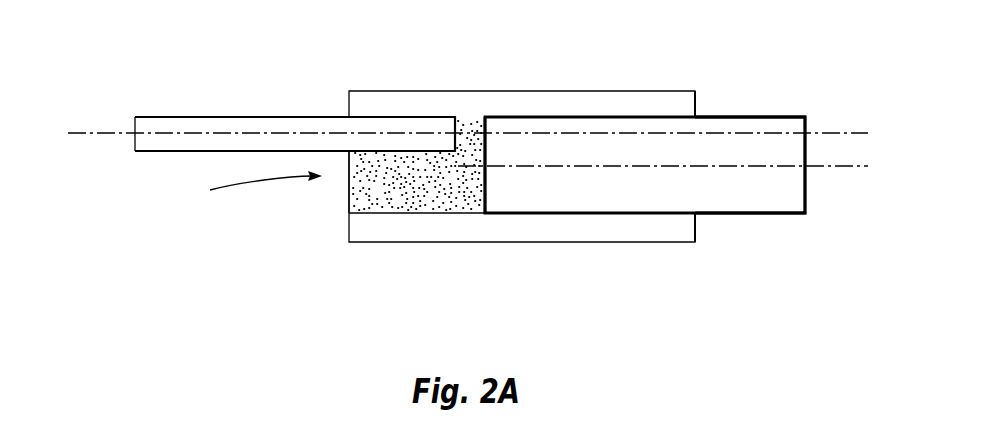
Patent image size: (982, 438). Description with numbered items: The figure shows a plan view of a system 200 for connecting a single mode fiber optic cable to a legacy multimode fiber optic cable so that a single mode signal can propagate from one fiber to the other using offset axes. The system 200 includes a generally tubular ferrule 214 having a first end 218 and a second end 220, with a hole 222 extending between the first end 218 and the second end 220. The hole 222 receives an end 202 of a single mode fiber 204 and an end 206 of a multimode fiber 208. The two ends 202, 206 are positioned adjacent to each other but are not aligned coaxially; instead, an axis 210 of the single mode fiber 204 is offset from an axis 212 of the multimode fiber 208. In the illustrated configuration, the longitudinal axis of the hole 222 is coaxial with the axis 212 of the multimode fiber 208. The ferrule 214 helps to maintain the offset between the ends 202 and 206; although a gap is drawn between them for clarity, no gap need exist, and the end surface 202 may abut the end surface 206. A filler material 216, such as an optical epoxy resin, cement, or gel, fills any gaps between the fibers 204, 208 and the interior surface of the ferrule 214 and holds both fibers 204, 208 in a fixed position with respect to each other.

The system 200 is at (445, 171).
The end of single mode fiber 202 is at (460, 128).
The single mode fiber 204 is at (332, 117).
The end of multimode fiber 206 is at (484, 140).
The multimode fiber 208 is at (632, 117).
The axis of single mode fiber 210 is at (113, 133).
The axis of multimode fiber 212 is at (475, 168).
The ferrule 214 is at (528, 243).
The filler material 216 is at (378, 211).
The first end 218 is at (349, 202).
The second end 220 is at (695, 107).
The hole 222 is at (245, 192).